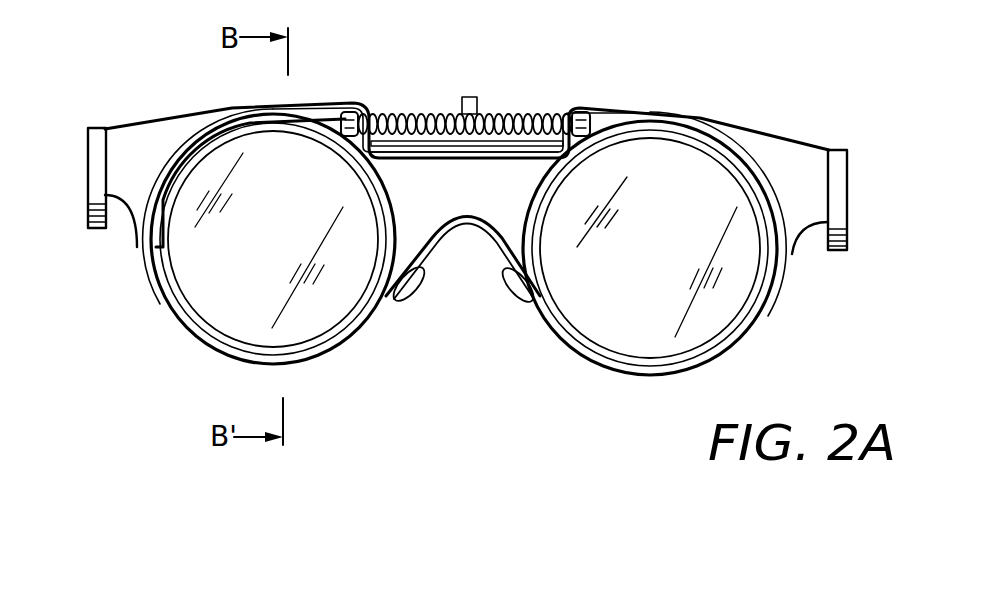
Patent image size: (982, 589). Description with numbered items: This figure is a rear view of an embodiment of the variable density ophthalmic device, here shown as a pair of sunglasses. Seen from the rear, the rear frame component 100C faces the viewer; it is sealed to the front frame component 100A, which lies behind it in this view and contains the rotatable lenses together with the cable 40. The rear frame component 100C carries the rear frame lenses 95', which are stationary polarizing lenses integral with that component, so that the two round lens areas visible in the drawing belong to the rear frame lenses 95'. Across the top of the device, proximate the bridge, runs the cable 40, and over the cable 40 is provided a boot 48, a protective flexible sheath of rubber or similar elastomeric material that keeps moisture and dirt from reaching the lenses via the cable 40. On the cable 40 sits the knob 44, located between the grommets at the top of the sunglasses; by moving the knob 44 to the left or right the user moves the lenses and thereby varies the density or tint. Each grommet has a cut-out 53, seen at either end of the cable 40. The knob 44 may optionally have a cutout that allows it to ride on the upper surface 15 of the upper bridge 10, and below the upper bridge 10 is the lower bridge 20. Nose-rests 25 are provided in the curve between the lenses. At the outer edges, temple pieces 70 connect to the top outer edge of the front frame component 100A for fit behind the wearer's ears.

The upper bridge 10 is at (485, 158).
The upper surface 15 is at (458, 147).
The lower bridge 20 is at (478, 225).
The nose-rests 25 is at (514, 298).
The cable 40 is at (255, 113).
The knob 44 is at (476, 108).
The boot 48 is at (422, 110).
The cut-out 53 is at (356, 138).
The temple pieces 70 is at (90, 179).
The rear frame lenses 95' is at (475, 267).
The front frame component 100A is at (177, 326).
The rear frame component 100C is at (228, 348).